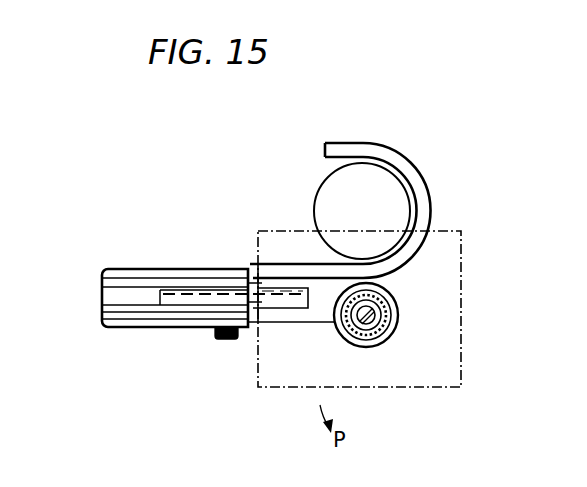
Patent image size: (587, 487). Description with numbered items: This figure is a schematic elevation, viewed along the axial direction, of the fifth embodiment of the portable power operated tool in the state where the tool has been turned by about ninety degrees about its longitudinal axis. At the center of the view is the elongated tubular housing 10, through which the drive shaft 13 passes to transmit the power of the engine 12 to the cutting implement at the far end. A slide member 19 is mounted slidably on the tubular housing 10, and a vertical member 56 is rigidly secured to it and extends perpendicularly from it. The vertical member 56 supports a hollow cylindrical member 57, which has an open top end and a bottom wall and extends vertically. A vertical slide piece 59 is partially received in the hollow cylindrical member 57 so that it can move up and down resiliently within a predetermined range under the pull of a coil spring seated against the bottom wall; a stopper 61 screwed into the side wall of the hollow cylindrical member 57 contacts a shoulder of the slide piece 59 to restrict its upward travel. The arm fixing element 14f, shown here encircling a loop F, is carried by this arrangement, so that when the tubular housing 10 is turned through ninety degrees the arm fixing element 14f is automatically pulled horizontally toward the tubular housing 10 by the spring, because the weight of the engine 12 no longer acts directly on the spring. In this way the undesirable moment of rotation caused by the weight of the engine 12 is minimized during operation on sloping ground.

The tubular housing 10 is at (377, 347).
The engine 12 is at (458, 231).
The drive shaft 13 is at (373, 309).
The arm fixing element 14f is at (402, 156).
The slide member 19 is at (398, 322).
The vertical member 56 is at (307, 315).
The hollow cylindrical member 57 is at (188, 266).
The vertical slide piece 59 is at (278, 298).
The stopper 61 is at (223, 340).
The film loop F is at (316, 197).